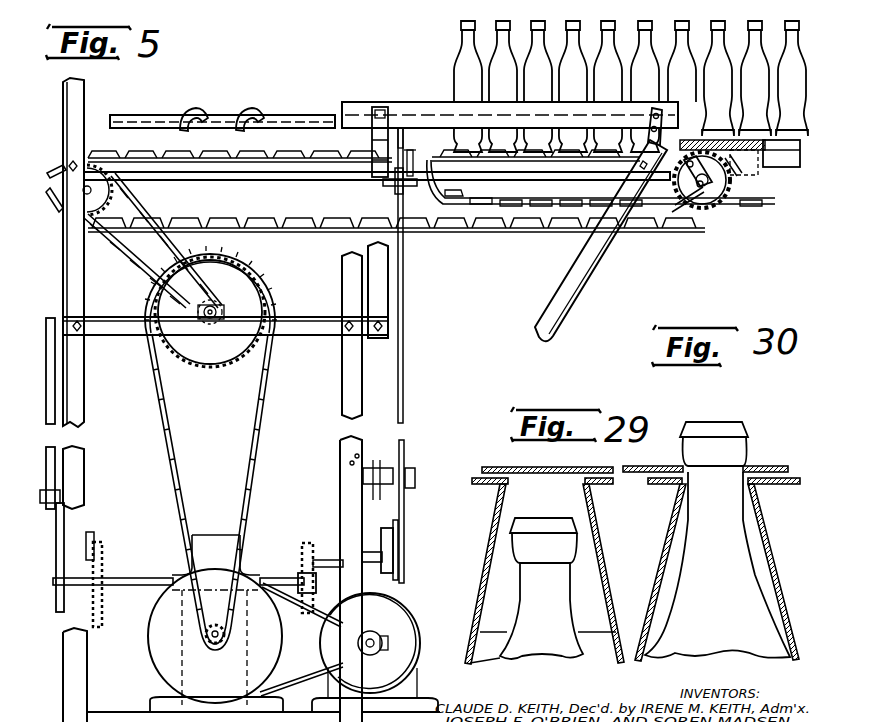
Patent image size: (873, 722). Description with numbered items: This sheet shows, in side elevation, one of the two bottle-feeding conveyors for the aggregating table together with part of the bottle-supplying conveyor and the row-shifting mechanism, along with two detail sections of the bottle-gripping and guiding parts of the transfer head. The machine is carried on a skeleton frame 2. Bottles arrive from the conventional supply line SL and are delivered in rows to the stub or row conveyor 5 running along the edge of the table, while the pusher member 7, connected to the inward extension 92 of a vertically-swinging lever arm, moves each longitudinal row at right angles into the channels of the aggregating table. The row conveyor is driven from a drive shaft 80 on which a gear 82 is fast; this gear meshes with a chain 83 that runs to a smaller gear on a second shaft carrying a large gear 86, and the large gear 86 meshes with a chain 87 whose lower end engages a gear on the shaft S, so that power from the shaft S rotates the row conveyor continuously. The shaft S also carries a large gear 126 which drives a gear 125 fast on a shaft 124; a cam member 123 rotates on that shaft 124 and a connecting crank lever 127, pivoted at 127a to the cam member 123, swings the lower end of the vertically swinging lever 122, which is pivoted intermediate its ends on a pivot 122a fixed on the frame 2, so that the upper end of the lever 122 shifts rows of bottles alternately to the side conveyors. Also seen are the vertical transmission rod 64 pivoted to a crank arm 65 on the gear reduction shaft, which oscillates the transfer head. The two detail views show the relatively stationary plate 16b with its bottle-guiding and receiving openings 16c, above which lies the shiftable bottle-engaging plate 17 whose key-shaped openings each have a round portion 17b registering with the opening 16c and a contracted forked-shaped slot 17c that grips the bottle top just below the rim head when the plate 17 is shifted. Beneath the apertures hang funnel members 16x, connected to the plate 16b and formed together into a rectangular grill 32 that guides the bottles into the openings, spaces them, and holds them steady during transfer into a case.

In FIG. 5, the skeleton frame 2 is at (63, 125).
In FIG. 5, the stub or row conveyor 5 is at (100, 150).
In FIG. 5, the pusher member 7 is at (310, 115).
In FIG. 5, the supply line SL is at (427, 160).
In FIG. 5, the inward extension 92 is at (198, 109).
In FIG. 5, the drive shaft 80 is at (88, 190).
In FIG. 5, the gear 82 is at (116, 207).
In FIG. 5, the chain 83 is at (130, 272).
In FIG. 5, the vertical transmission rod 64 is at (46, 328).
In FIG. 5, the crank arm 65 is at (56, 540).
In FIG. 5, the large gear 86 is at (228, 370).
In FIG. 5, the chain 87 is at (270, 294).
In FIG. 5, the vertically swinging lever 122 is at (403, 368).
In FIG. 5, the pivot 122a is at (415, 478).
In FIG. 5, the cam member 123 is at (382, 556).
In FIG. 5, the shaft 124 is at (316, 560).
In FIG. 5, the gear 125 is at (304, 544).
In FIG. 5, the large gear 126 is at (306, 620).
In FIG. 5, the connecting crank lever 127 is at (398, 532).
In FIG. 5, the pivot 127a is at (386, 530).
In FIG. 5, the shaft S is at (270, 578).
In FIG. 30, the shiftable bottle-engaging member or plate 17 is at (758, 466).
In FIG. 29, the round portion 17b is at (512, 466).
In FIG. 30, the round portion 17b is at (670, 466).
In FIG. 29, the forked-shaped bottle engaging slot 17c is at (594, 484).
In FIG. 30, the forked-shaped bottle engaging slot 17c is at (742, 458).
In FIG. 29, the relatively stationary member or plate 16b is at (476, 484).
In FIG. 30, the relatively stationary member or plate 16b is at (768, 486).
In FIG. 29, the funnel member 16x is at (616, 548).
In FIG. 30, the funnel member 16x is at (717, 572).
In FIG. 30, the bottle-guiding and receiving opening 16c is at (764, 534).
In FIG. 29, the grill 32 is at (618, 663).